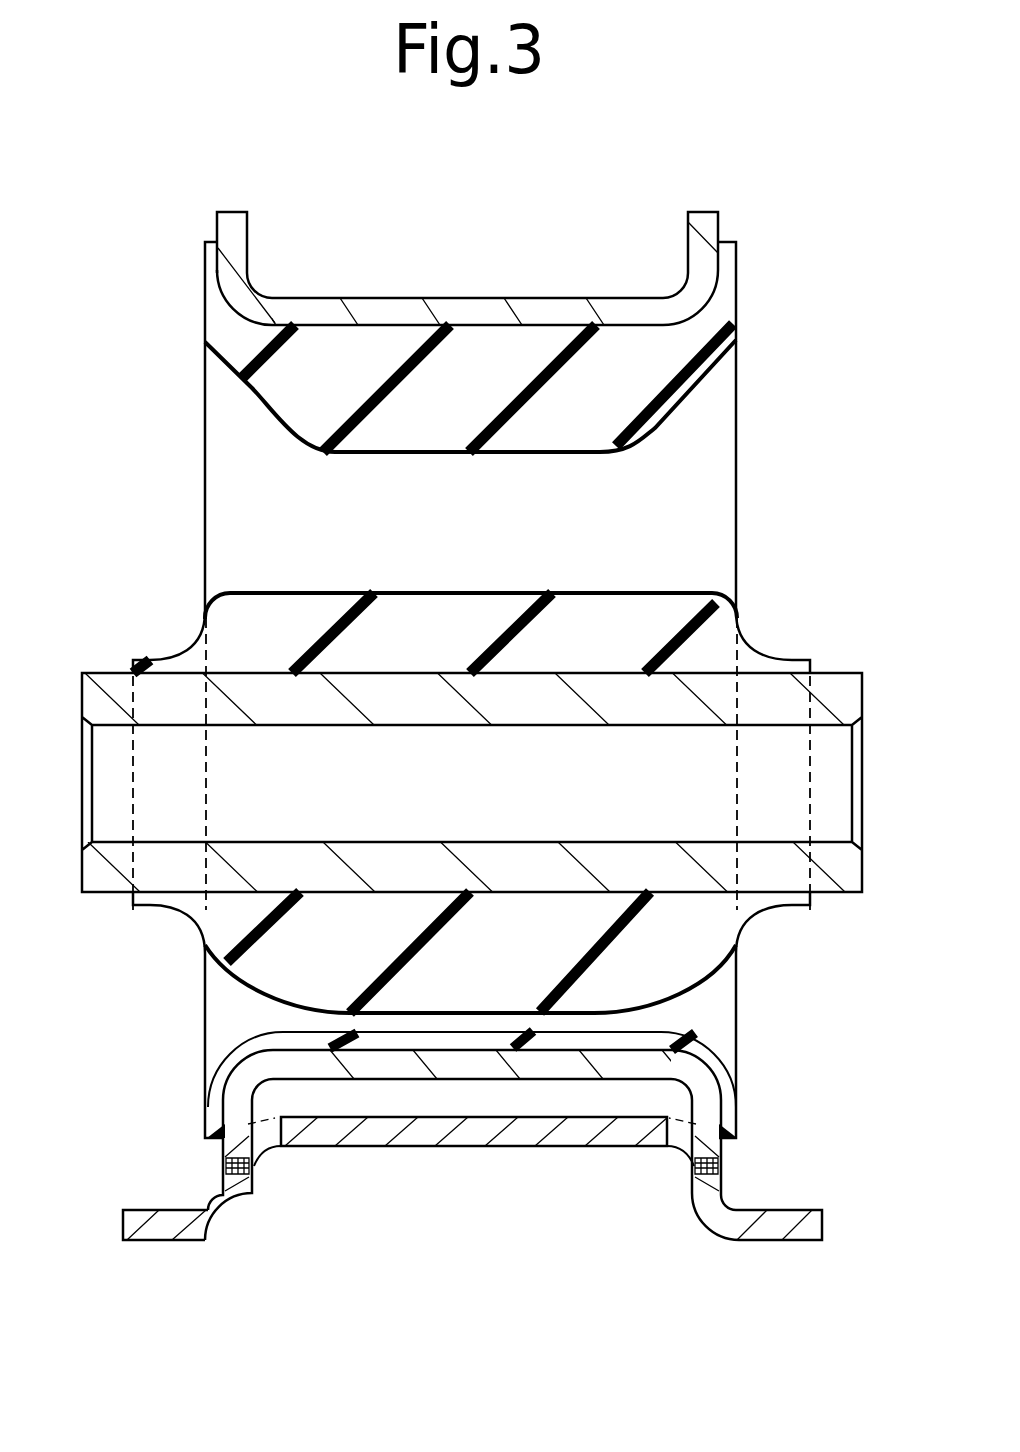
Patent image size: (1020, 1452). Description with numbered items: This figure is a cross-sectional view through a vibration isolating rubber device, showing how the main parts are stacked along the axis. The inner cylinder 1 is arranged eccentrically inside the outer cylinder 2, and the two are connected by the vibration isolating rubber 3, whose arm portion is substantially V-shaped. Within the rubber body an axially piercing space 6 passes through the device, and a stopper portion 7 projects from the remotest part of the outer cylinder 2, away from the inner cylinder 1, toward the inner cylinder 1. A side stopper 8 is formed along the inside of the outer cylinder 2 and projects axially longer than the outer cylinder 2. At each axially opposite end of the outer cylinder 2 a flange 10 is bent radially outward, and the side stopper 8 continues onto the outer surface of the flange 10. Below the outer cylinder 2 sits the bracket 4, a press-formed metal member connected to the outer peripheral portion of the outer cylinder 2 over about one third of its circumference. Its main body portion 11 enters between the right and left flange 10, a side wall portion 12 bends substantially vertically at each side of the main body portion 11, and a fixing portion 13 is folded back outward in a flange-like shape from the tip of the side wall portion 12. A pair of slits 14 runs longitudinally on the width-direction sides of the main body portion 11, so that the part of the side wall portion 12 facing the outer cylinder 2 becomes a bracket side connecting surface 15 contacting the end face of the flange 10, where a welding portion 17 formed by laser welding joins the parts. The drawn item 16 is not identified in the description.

The inner cylinder 1 is at (423, 722).
The outer cylinder 2 is at (461, 290).
The vibration isolating rubber 3 is at (473, 606).
The bracket 4 is at (481, 1170).
The axially piercing space 6 is at (710, 483).
The stopper portion 7 is at (432, 450).
The side stopper 8 is at (203, 288).
The flange 10 is at (232, 220).
The main body portion 11 is at (413, 1147).
The side wall portion 12 is at (246, 1202).
The fixing portion 13 is at (162, 1238).
The slit 14 is at (263, 1144).
The bracket side connecting surface 15 is at (226, 1165).
The outer sleeve 16 is at (192, 424).
The welding portion 17 is at (226, 1176).